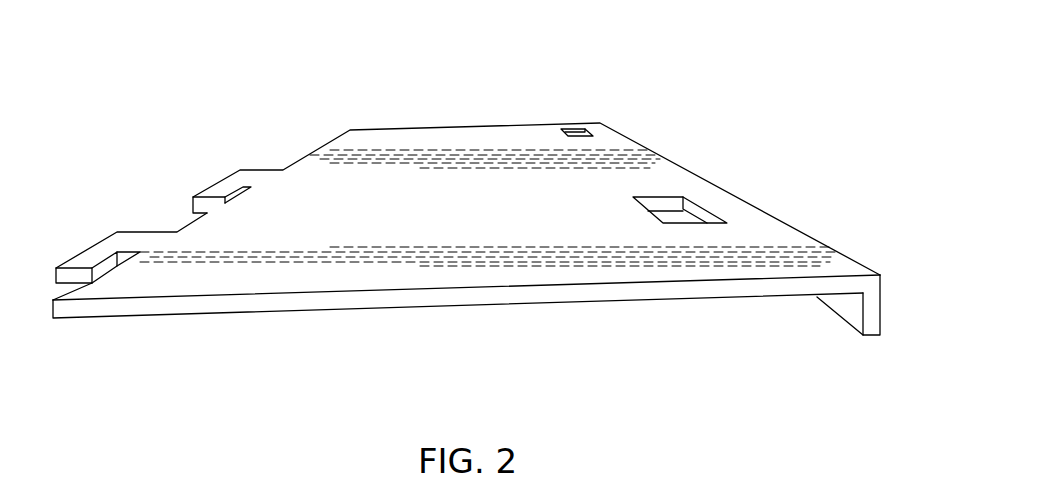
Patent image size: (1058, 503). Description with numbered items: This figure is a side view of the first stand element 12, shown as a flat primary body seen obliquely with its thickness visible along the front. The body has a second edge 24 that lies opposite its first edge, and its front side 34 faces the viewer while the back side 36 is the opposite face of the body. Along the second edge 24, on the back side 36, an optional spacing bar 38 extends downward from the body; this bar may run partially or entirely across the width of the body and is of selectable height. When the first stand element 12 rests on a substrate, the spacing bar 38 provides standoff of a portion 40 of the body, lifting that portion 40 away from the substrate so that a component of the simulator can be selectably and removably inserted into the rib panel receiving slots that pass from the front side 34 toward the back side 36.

The first stand element 12 is at (705, 66).
The second edge 24 is at (740, 197).
The front side 34 is at (395, 292).
The back side 36 is at (458, 307).
The spacing bar 38 is at (870, 310).
The portion of the body 40 is at (850, 308).